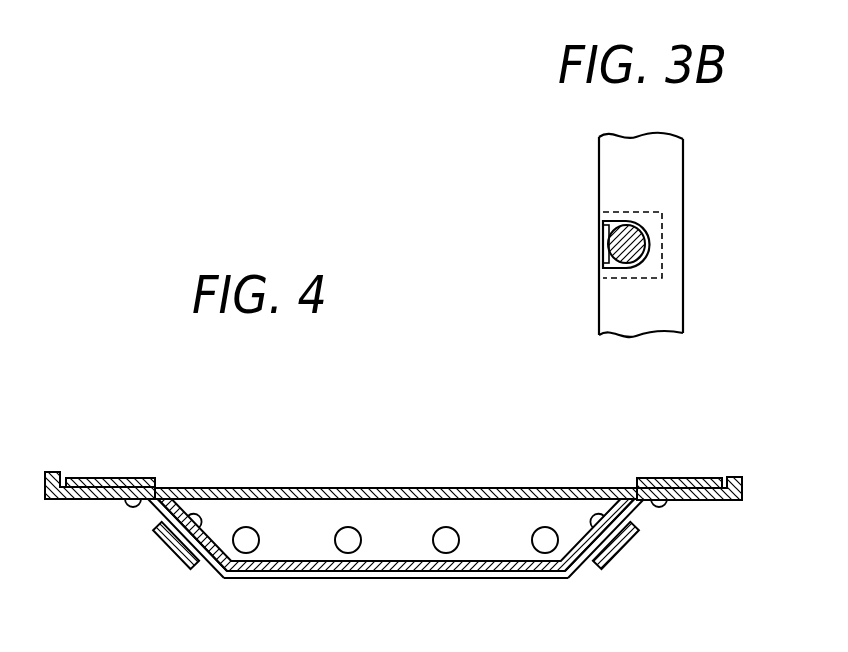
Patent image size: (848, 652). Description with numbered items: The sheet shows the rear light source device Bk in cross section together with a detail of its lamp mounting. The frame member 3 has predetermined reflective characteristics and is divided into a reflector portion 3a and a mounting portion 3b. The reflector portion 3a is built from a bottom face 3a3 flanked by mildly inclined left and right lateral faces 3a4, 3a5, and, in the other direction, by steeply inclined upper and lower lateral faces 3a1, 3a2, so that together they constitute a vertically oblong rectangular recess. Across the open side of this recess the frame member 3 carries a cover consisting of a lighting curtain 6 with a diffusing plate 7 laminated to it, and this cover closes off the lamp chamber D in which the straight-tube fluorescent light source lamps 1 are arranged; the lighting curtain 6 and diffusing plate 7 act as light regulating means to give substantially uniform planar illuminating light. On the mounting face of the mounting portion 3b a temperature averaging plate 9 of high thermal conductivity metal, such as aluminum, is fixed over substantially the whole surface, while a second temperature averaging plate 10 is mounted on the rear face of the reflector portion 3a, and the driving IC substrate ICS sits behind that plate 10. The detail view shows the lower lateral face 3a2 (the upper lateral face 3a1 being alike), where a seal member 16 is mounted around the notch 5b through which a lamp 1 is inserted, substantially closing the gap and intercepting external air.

In FIG. 3B, the upper lateral face 3a1 is at (698, 235).
In FIG. 3B, the lower lateral face 3a2 is at (672, 168).
In FIG. 3B, the seal member 16 is at (662, 233).
In FIG. 3B, the notch 5b is at (603, 257).
In FIG. 4, the rear light source device Bk is at (188, 441).
In FIG. 4, the lamp chamber D is at (398, 514).
In FIG. 4, the diffusing plate 7 is at (472, 493).
In FIG. 4, the temperature averaging plate 9 is at (683, 478).
In FIG. 4, the frame member 3 is at (740, 466).
In FIG. 4, the mounting portion 3b is at (703, 500).
In FIG. 4, the reflector portion 3a is at (389, 568).
In FIG. 4, the bottom face 3a3 is at (308, 556).
In FIG. 4, the left lateral face 3a4 is at (167, 543).
In FIG. 4, the right lateral face 3a5 is at (627, 547).
In FIG. 4, the temperature averaging plate 10 is at (583, 567).
In FIG. 4, the lighting curtain 6 is at (512, 500).
In FIG. 4, the light source lamp 1 is at (246, 553).
In FIG. 4, the driving IC substrate ICS is at (187, 567).